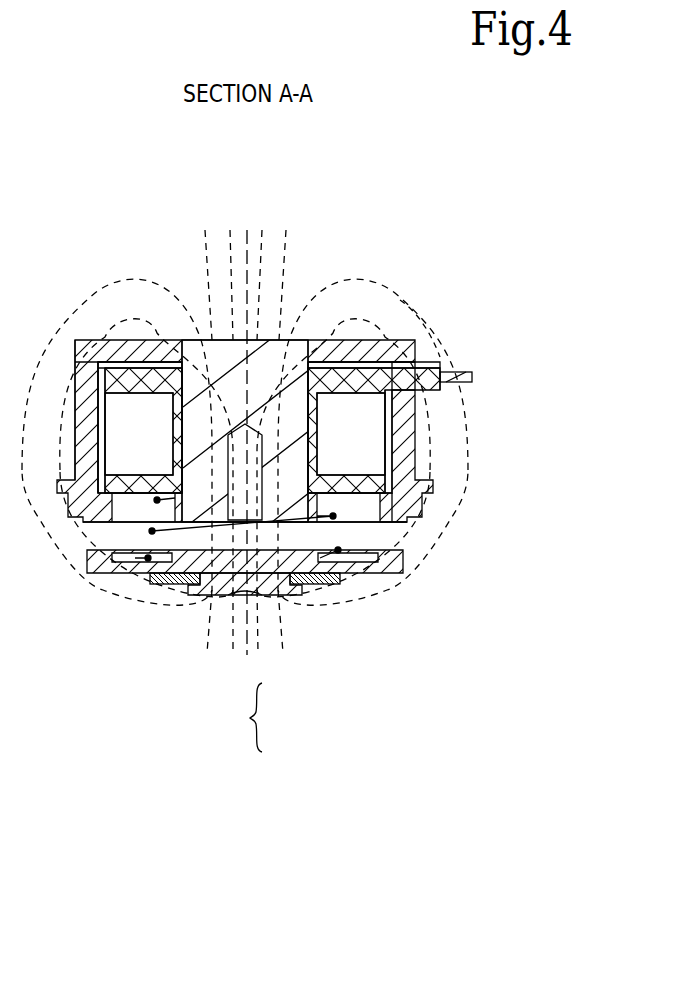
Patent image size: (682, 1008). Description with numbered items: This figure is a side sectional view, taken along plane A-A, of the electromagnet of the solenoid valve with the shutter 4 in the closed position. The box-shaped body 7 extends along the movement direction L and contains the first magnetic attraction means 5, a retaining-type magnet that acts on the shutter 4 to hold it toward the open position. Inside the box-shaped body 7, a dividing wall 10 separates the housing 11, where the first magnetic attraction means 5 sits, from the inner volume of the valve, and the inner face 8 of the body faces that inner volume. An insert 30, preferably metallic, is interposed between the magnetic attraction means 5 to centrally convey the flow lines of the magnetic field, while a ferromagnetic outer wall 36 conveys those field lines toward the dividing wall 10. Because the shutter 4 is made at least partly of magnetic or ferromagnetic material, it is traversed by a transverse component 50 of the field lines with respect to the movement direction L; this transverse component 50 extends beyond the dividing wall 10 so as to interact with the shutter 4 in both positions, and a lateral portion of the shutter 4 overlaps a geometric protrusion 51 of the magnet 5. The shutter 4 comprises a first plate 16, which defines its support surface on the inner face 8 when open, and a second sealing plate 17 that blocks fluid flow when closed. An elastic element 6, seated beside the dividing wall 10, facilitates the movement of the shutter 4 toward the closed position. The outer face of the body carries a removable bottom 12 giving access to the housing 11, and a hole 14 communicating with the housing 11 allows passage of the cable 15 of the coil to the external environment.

The shutter 4 is at (272, 717).
The first magnetic attraction means 5 is at (418, 437).
The elastic element 6 is at (345, 533).
The box-shaped body 7 is at (461, 318).
The inner face 8 is at (405, 534).
The dividing wall 10 is at (395, 495).
The housing 11 is at (92, 415).
The removable bottom 12 is at (150, 348).
The hole 14 is at (432, 404).
The cable 15 is at (472, 377).
The first plate 16 is at (95, 580).
The second sealing plate 17 is at (152, 583).
The insert 30 is at (210, 348).
The outer wall 36 is at (360, 457).
The transverse component 50 is at (395, 280).
The geometric protrusion 51 is at (357, 568).
The movement direction L is at (277, 347).